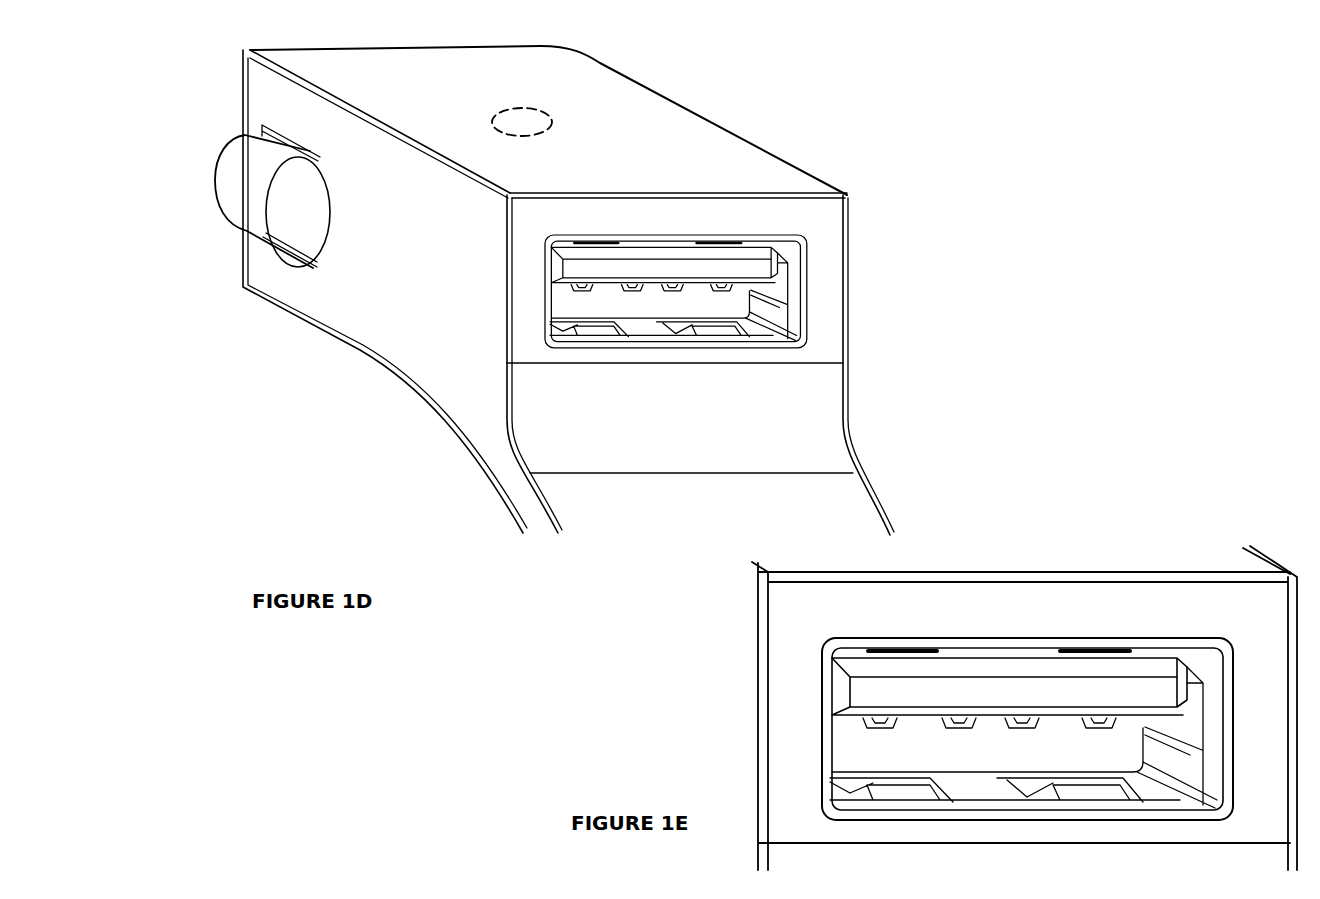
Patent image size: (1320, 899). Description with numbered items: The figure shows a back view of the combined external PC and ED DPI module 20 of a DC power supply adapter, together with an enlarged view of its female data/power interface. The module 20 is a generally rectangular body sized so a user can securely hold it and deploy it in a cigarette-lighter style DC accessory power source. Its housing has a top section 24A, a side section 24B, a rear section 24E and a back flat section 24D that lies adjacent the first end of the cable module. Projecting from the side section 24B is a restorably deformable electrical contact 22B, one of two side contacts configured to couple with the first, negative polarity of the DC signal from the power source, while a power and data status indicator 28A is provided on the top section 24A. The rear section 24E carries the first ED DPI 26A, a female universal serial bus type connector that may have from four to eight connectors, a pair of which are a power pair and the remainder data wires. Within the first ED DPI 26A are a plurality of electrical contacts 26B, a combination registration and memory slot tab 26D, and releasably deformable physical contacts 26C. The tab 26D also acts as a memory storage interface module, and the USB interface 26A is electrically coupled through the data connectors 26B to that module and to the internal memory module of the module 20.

In FIG. 1D, the combined external PC and ED DPI module 20 is at (542, 290).
In FIG. 1D, the restorably deformable electrical contact 22B is at (240, 205).
In FIG. 1D, the top section 24A is at (391, 92).
In FIG. 1D, the side section 24B is at (412, 273).
In FIG. 1D, the back flat section 24D is at (628, 425).
In FIG. 1D, the rear section 24E is at (830, 237).
In FIG. 1E, the rear section 24E is at (671, 749).
In FIG. 1D, the first ED DPI 26A is at (657, 335).
In FIG. 1E, the first ED DPI 26A is at (842, 753).
In FIG. 1E, the electrical contacts 26B is at (952, 727).
In FIG. 1E, the releasably deformable physical contacts 26C is at (1090, 780).
In FIG. 1E, the combination registration and memory slot tab 26D is at (1040, 688).
In FIG. 1D, the power and data status indicator 28A is at (520, 113).